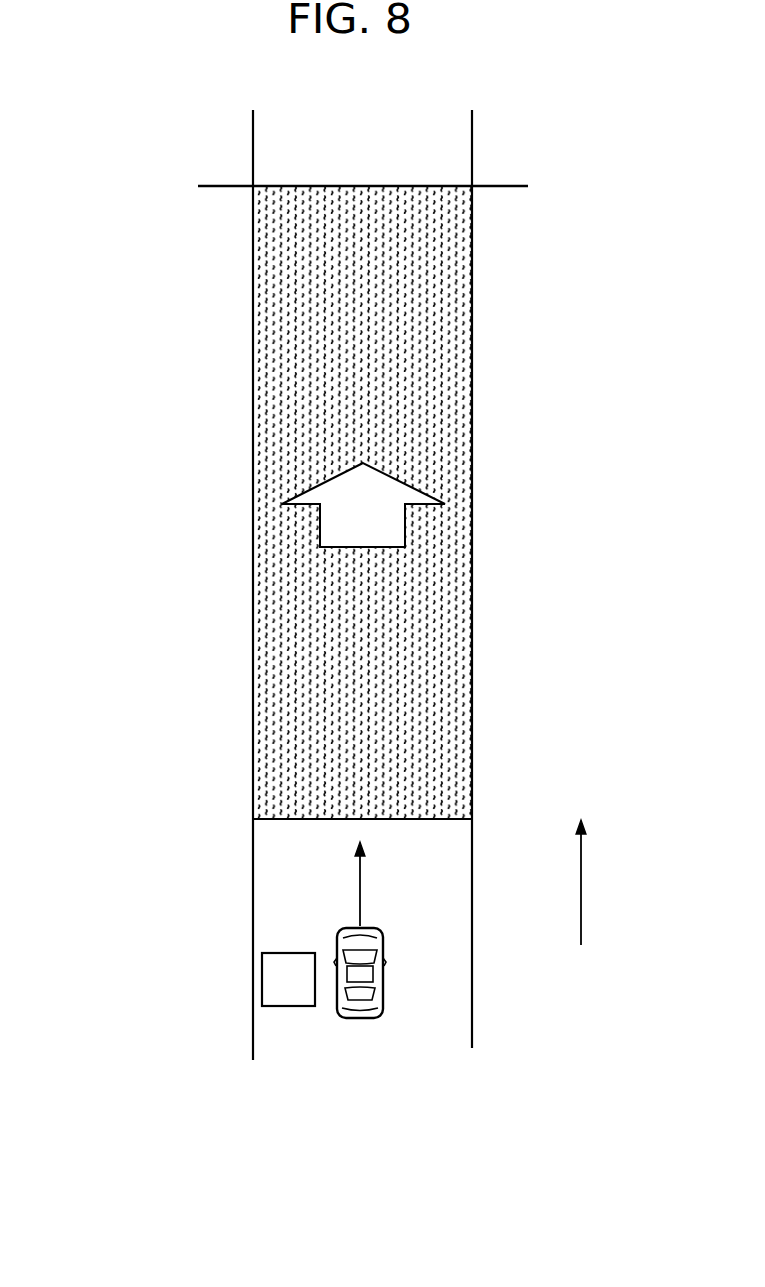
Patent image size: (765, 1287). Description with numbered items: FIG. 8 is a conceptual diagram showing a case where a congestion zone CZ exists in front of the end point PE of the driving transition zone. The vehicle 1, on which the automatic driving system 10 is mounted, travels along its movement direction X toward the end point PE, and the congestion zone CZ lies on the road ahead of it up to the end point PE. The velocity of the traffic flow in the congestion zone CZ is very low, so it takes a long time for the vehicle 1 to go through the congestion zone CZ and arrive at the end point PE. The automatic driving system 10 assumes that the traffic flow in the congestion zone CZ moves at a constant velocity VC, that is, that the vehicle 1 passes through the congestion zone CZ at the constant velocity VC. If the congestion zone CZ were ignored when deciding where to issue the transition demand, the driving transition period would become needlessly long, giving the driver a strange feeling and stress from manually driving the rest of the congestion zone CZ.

The vehicle 1 is at (363, 1020).
The automatic driving system 10 is at (312, 979).
The congestion zone CZ is at (224, 816).
The end point of the driving transition zone PE is at (341, 185).
The constant velocity VC is at (363, 505).
The movement direction of the vehicle X is at (582, 863).